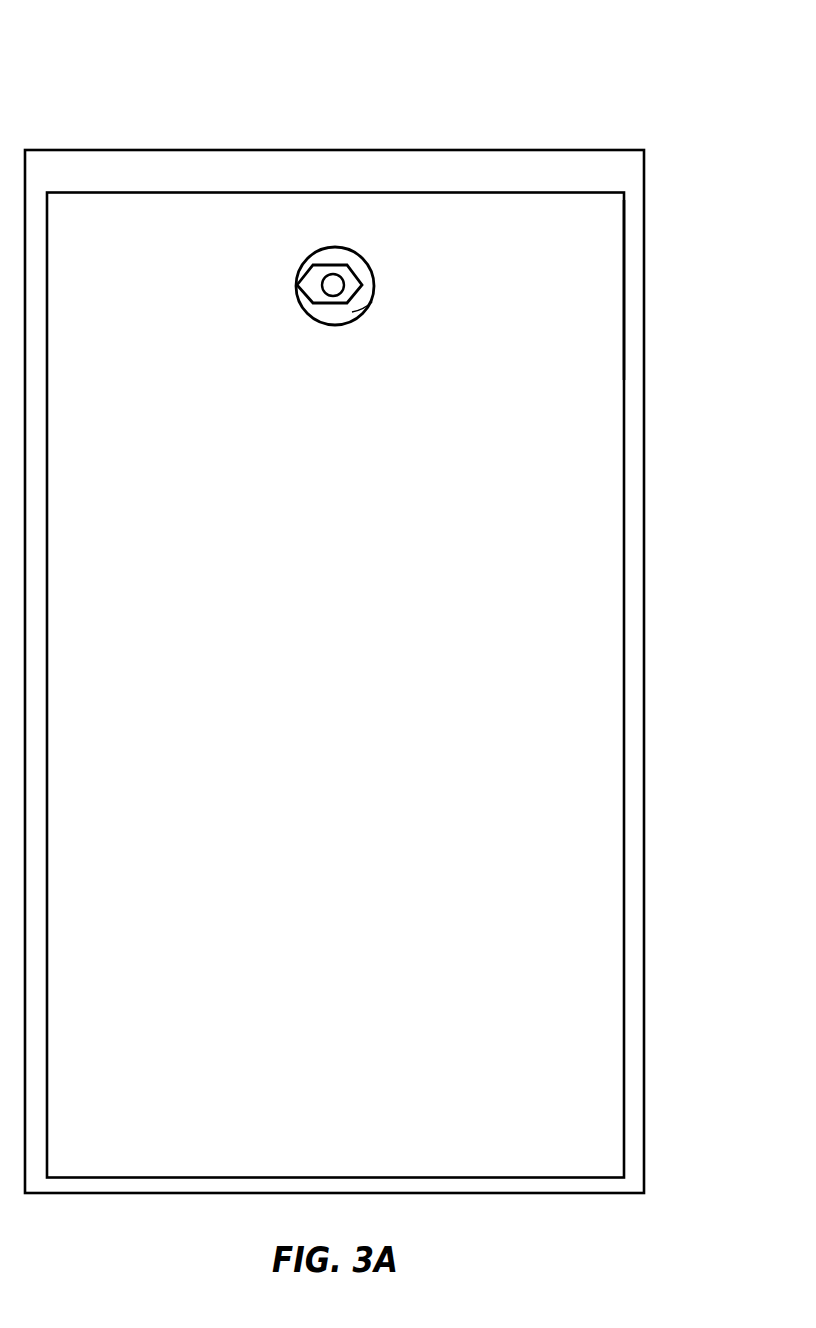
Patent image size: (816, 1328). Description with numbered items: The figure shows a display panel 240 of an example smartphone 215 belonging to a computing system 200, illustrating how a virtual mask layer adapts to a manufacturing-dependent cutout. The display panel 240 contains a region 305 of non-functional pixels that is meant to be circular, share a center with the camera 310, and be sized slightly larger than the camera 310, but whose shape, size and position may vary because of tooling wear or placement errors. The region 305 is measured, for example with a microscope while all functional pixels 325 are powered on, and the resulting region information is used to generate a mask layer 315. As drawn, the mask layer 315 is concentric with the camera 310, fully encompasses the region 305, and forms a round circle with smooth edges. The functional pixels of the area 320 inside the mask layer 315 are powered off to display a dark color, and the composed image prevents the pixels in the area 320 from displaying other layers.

The computing system 200 is at (360, 596).
The smartphone 215 is at (605, 148).
The display panel 240 is at (522, 191).
The region 305 is at (320, 265).
The camera 310 is at (352, 277).
The mask layer 315 is at (335, 327).
The area 320 is at (352, 313).
The functional pixels 325 is at (610, 293).